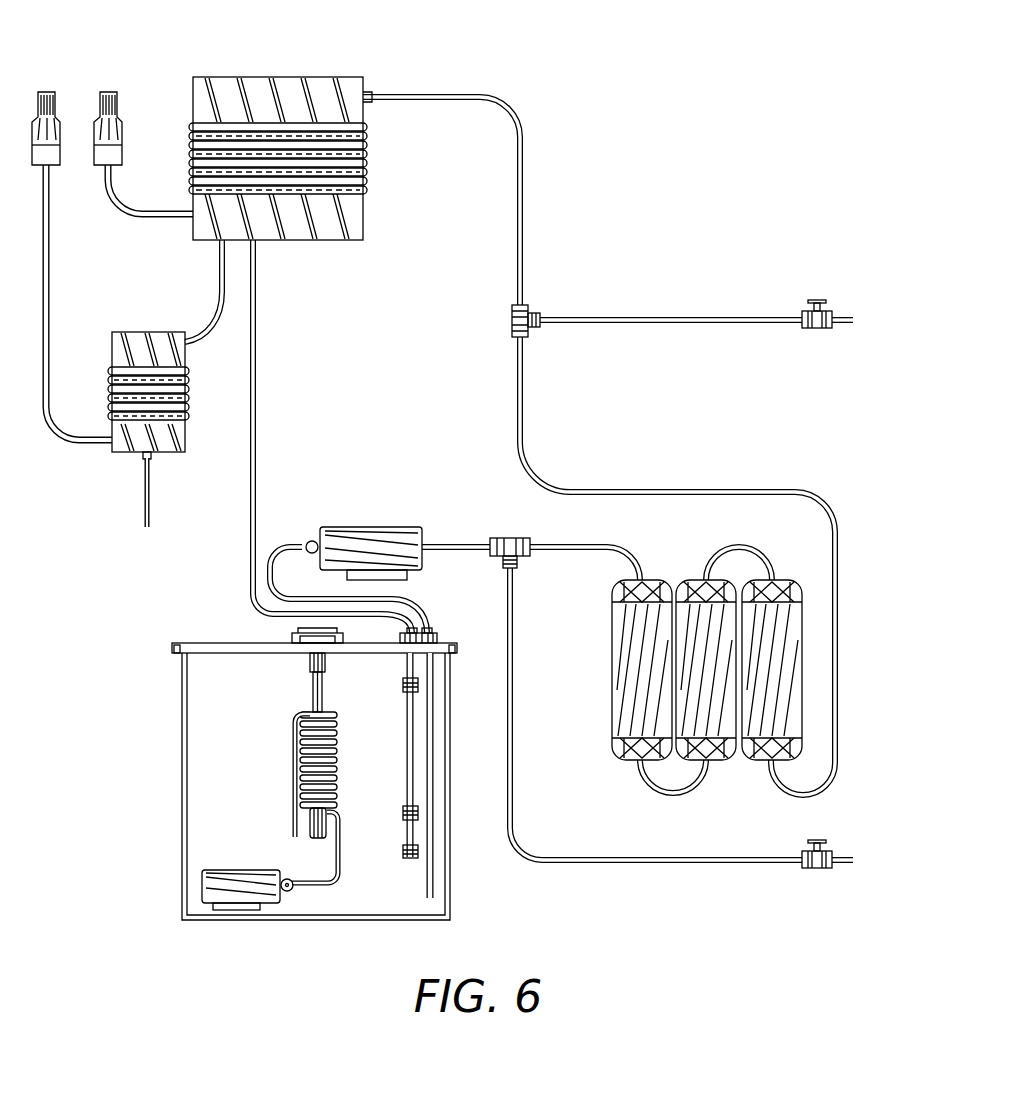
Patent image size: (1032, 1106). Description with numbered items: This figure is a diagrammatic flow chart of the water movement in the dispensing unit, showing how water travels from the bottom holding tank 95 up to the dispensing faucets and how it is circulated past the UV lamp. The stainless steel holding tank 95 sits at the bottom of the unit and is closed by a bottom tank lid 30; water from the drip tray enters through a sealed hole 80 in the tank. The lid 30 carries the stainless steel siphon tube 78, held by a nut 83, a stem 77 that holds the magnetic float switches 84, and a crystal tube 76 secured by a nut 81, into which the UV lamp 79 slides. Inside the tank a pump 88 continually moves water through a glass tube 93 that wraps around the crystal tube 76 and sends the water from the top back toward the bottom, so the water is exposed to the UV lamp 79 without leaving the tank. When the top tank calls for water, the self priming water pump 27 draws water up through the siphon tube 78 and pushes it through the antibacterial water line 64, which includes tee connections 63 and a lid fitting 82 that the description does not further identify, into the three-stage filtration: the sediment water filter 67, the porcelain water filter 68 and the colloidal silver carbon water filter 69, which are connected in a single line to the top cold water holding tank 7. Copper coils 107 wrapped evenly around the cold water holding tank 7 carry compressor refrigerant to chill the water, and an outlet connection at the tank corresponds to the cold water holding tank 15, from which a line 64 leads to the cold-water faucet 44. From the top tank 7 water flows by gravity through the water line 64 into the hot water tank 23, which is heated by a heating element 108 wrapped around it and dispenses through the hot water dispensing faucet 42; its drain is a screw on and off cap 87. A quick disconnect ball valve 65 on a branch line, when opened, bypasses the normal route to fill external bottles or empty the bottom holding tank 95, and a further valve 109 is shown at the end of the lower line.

The cold water holding tank 7 is at (311, 129).
The cold water holding tank 15 is at (367, 88).
The copper coils 107 is at (370, 156).
The hot water dispensing faucet 42 is at (42, 92).
The cold-water faucet 44 is at (104, 92).
The water line 64 is at (143, 216).
The hot water tank 23 is at (161, 374).
The heating element 108 is at (186, 398).
The screw on and off cap 87 is at (146, 506).
The tee fitting 63 is at (530, 308).
The quick disconnect ball valve 65 is at (817, 300).
The self priming water pump 27 is at (376, 527).
The lid fitting 82 is at (420, 631).
The nut 83 is at (433, 633).
The sediment water filter 67 is at (631, 692).
The porcelain water filter 68 is at (694, 672).
The colloidal silver carbon water filter 69 is at (794, 662).
The sealed hole 80 is at (226, 641).
The nut 81 is at (326, 634).
The bottom tank lid 30 is at (171, 651).
The crystal tube 76 is at (312, 745).
The stem 77 is at (408, 740).
The glass tube 93 is at (294, 776).
The UV lamp 79 is at (338, 762).
The holding tank 95 is at (284, 781).
The magnetic float switches 84 is at (405, 812).
The pump 88 is at (246, 869).
The stainless steel siphon tube 78 is at (434, 765).
The valve 109 is at (812, 868).